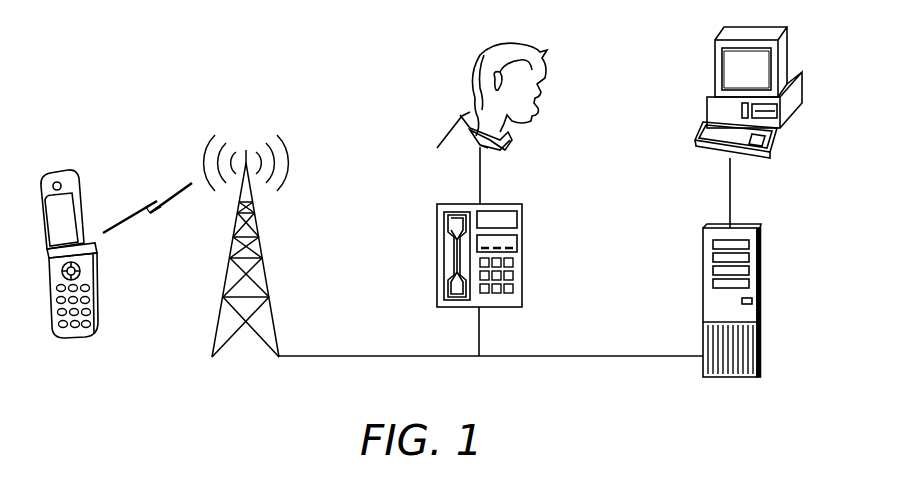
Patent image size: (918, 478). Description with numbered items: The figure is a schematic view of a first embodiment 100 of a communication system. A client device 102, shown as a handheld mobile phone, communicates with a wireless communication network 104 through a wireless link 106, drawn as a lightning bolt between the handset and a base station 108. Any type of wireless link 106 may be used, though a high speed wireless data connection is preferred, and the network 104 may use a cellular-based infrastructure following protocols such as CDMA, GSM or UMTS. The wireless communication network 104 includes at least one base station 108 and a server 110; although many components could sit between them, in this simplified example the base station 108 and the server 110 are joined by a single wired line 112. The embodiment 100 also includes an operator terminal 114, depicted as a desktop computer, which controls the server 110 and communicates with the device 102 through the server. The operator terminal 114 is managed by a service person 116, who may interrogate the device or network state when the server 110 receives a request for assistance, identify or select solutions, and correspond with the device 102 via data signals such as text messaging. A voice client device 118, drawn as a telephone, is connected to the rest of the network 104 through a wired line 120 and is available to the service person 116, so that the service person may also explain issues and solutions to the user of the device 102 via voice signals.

The first embodiment 100 is at (94, 64).
The client device 102 is at (99, 285).
The wireless communication network 104 is at (580, 374).
The wireless link 106 is at (172, 196).
The base station 108 is at (266, 274).
The server 110 is at (762, 306).
The wired line 112 is at (330, 356).
The operator terminal 114 is at (802, 108).
The service person 116 is at (473, 73).
The voice client device 118 is at (437, 257).
The wired line 120 is at (481, 327).